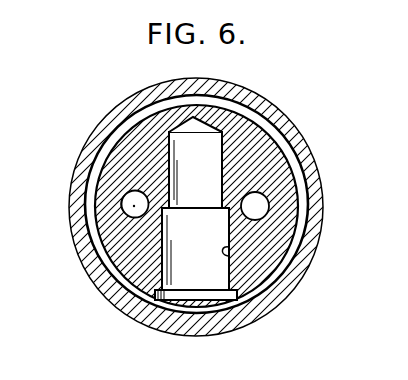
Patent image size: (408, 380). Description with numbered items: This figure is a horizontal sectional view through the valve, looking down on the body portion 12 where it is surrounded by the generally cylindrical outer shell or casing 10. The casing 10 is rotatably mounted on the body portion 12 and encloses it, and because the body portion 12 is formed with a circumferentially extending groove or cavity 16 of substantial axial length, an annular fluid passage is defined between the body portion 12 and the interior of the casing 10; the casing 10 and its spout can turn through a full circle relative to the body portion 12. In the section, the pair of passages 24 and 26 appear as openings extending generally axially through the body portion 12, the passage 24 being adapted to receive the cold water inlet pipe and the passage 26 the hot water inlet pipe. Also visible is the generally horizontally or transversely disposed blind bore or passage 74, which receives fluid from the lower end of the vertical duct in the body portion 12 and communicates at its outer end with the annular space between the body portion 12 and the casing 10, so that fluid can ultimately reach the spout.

The outer shell or casing 10 is at (305, 130).
The body portion 12 is at (124, 146).
The circumferentially extending groove or cavity 16 is at (305, 217).
The passage 24 is at (134, 206).
The passage 26 is at (266, 195).
The blind bore or passage 74 is at (236, 258).